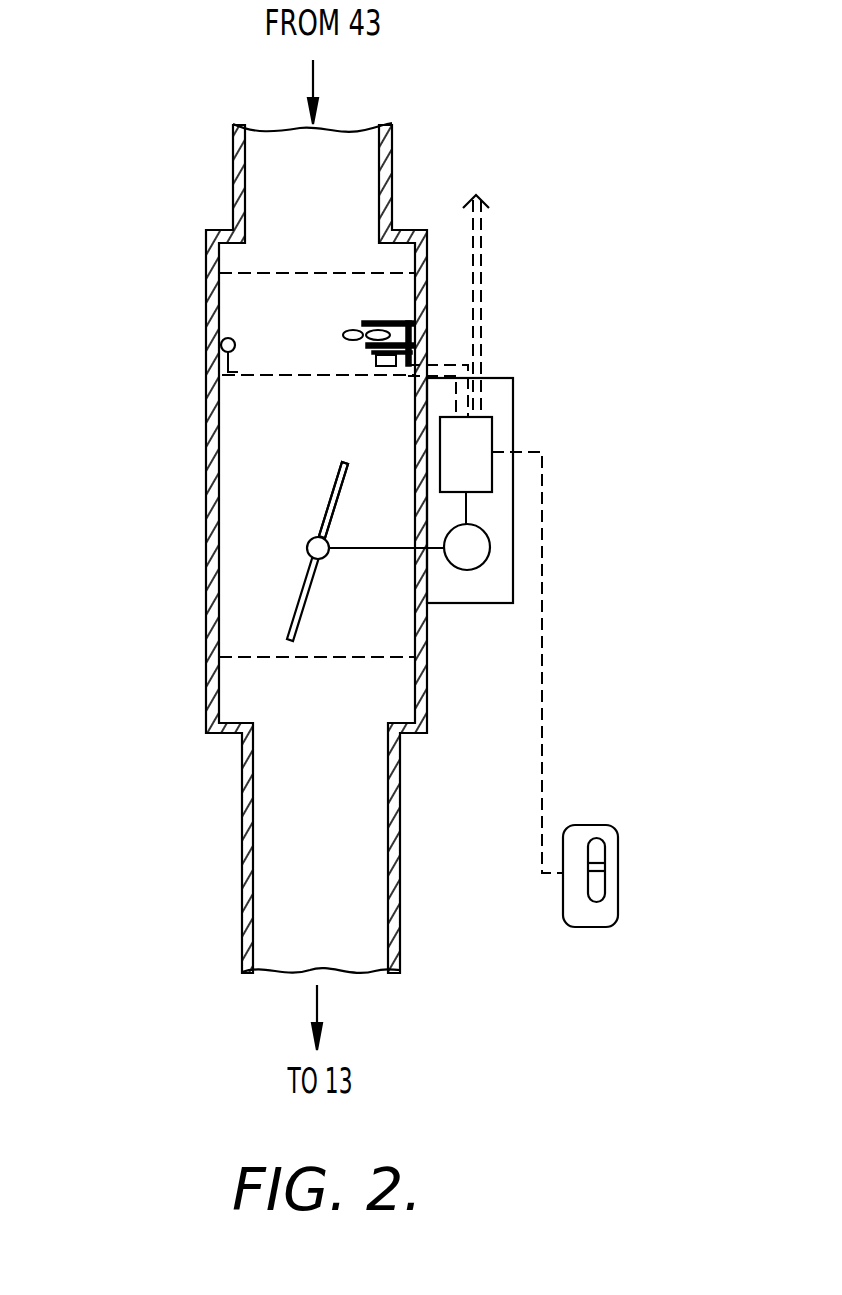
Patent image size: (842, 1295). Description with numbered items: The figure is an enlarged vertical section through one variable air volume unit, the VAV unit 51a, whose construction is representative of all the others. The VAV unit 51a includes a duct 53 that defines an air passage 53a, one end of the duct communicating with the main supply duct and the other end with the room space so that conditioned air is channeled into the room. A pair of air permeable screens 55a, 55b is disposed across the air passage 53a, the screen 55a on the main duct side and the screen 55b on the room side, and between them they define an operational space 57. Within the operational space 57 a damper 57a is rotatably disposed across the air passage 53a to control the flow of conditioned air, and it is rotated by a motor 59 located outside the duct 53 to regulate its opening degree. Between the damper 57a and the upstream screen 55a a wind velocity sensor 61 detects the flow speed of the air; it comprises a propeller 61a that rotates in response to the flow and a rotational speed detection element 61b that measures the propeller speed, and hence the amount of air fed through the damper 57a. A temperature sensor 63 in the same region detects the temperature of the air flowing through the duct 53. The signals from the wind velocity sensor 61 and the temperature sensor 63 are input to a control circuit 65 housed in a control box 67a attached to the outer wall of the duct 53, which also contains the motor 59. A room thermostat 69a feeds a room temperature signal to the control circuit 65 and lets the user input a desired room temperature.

The VAV unit 51a is at (206, 460).
The duct 53 is at (207, 578).
The air passage 53a is at (318, 688).
The air permeable screen 55a is at (316, 272).
The air permeable screen 55b is at (260, 660).
The operational space 57 is at (263, 602).
The damper 57a is at (331, 493).
The motor 59 is at (490, 547).
The wind velocity sensor 61 is at (418, 336).
The propeller 61a is at (390, 321).
The rotational speed detection element 61b is at (368, 359).
The temperature sensor 63 is at (207, 360).
The control circuit 65 is at (475, 440).
The control box 67a is at (487, 590).
The room thermostat 69a is at (618, 895).